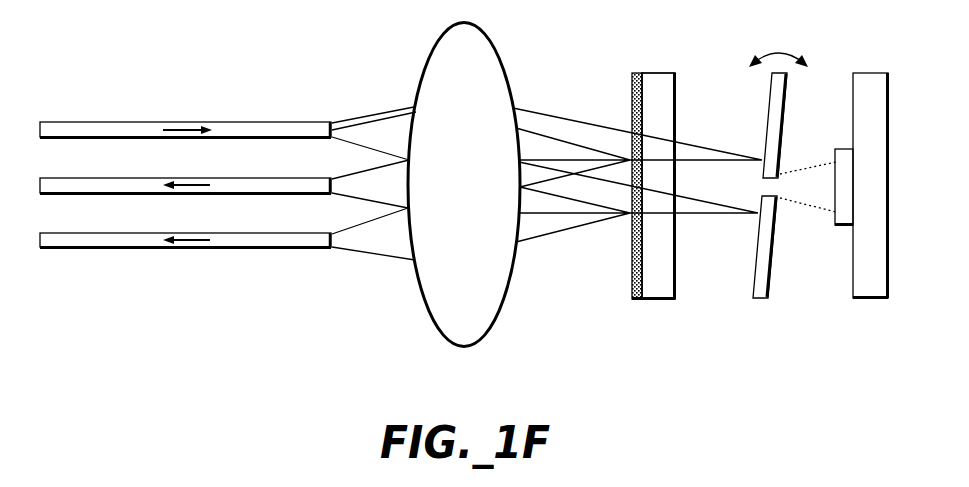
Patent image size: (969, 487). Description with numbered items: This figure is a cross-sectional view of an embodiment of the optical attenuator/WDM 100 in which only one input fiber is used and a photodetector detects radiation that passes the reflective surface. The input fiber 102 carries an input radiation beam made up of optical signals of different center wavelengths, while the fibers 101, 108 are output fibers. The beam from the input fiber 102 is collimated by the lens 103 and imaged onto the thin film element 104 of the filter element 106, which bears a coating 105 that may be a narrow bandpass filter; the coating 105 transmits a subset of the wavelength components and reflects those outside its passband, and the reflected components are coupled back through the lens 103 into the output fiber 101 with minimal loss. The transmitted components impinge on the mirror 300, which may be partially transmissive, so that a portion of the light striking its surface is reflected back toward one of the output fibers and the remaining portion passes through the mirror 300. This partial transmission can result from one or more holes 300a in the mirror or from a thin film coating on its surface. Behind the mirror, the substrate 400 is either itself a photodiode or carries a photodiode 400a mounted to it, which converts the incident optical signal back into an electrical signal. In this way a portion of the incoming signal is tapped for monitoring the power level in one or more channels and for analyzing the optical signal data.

The optical attenuator/WDM 100 is at (214, 358).
The output fiber 101 is at (66, 178).
The input fiber 102 is at (66, 122).
The output fiber 108 is at (66, 233).
The lens 103 is at (488, 316).
The thin film element 104 is at (660, 285).
The coating 105 is at (638, 72).
The filter element 106 is at (653, 73).
The mirror 300 is at (747, 283).
The holes 300a is at (770, 186).
The substrate 400 is at (877, 300).
The photodiode 400a is at (847, 228).